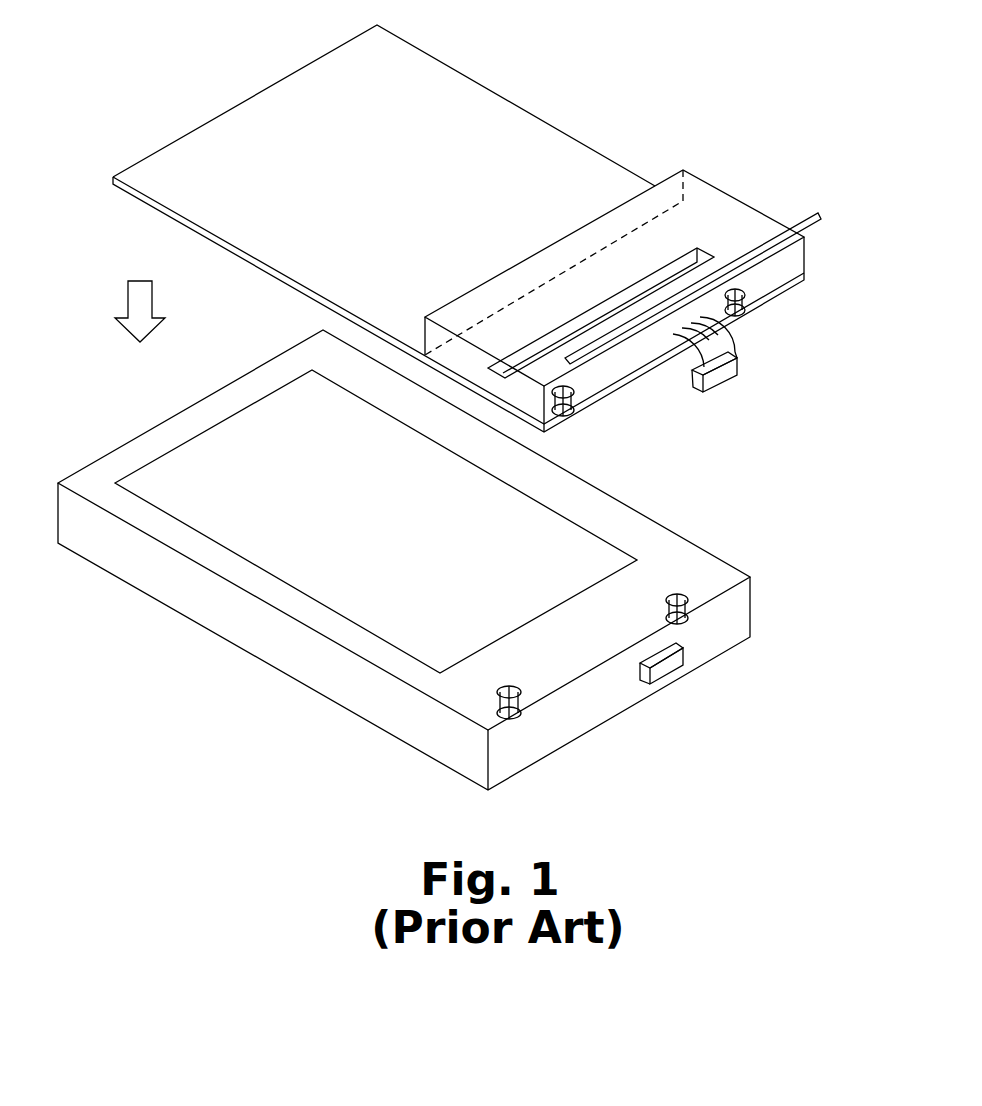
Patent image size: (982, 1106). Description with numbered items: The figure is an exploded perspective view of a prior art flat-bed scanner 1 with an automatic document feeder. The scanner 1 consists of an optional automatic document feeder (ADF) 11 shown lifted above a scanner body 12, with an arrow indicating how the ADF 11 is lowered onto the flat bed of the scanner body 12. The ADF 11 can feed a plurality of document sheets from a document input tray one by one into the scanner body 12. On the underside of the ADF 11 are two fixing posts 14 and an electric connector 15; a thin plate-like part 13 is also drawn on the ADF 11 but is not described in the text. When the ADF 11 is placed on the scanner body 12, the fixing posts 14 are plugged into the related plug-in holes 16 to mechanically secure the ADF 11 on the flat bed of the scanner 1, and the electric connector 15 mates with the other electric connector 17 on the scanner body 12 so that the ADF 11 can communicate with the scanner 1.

The flat-bed scanner 1 is at (474, 403).
The automatic document feeder 11 is at (513, 140).
The scanner body 12 is at (355, 693).
The contact plate 13 is at (820, 222).
The fixing posts 14 is at (573, 410).
The electric connector 15 is at (718, 377).
The plug-in holes 16 is at (520, 703).
The electric connector 17 is at (667, 667).